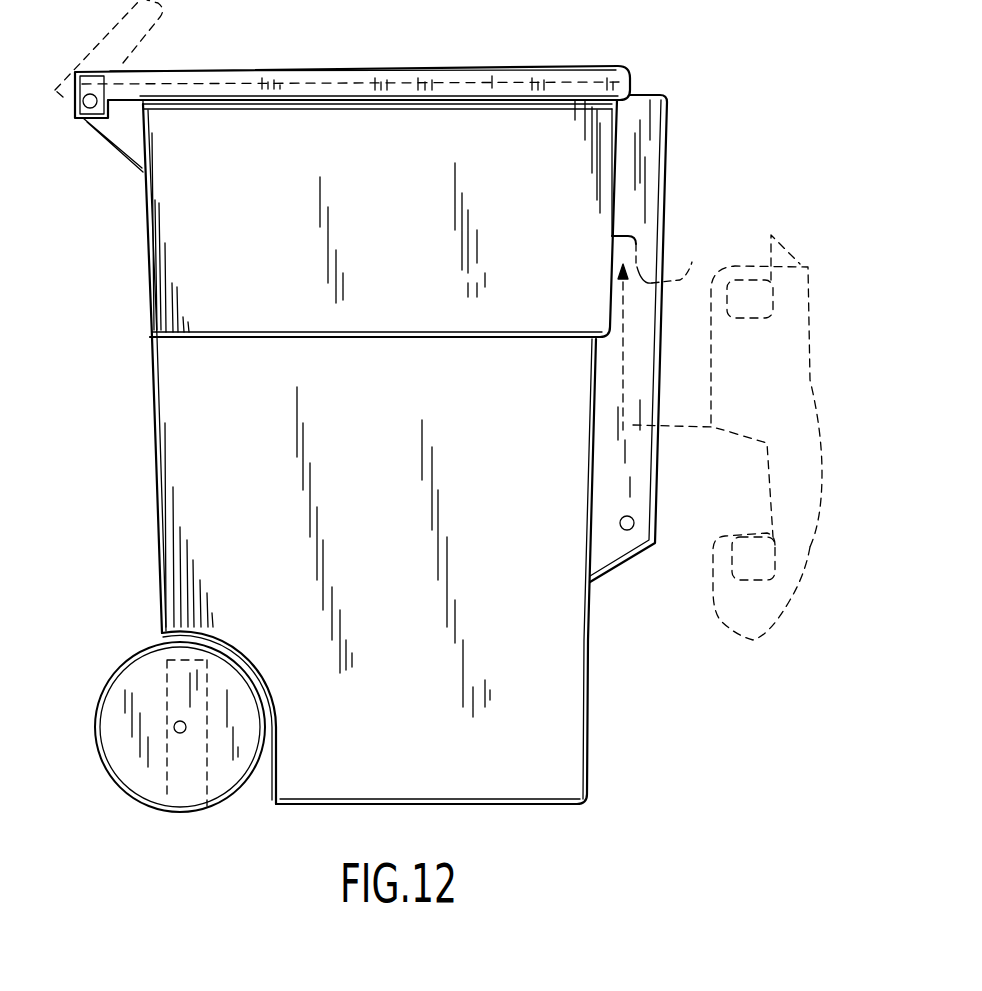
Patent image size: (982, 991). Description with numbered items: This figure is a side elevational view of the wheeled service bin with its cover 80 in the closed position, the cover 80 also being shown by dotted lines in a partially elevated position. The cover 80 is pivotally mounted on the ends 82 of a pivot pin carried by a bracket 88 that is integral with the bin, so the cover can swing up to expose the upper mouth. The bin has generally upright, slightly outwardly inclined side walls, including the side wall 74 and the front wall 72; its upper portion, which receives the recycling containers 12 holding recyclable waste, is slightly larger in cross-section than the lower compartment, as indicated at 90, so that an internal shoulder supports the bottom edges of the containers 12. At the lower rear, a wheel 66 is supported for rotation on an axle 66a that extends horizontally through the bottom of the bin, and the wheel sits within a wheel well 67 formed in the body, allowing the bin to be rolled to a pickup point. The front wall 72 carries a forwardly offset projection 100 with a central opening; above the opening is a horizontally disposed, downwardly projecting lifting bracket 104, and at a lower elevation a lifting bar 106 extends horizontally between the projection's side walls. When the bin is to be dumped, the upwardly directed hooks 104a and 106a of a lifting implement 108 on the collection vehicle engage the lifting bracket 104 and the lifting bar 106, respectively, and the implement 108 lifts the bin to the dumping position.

The recycling container 12 is at (284, 84).
The cover 80 is at (567, 66).
The ends of pivot pin 82 is at (83, 118).
The bracket 88 is at (128, 142).
The cross-section transition 90 is at (437, 338).
The side wall 74 is at (366, 570).
The front wall 72 is at (588, 731).
The wheel well 67 is at (220, 636).
The wheel 66 is at (125, 743).
The axle 66a is at (174, 724).
The forwardly offset projection 100 is at (650, 158).
The lifting bracket 104 is at (666, 259).
The hook 104a is at (822, 247).
The lifting bar 106 is at (633, 520).
The hook 106a is at (778, 548).
The lifting implement 108 is at (752, 395).